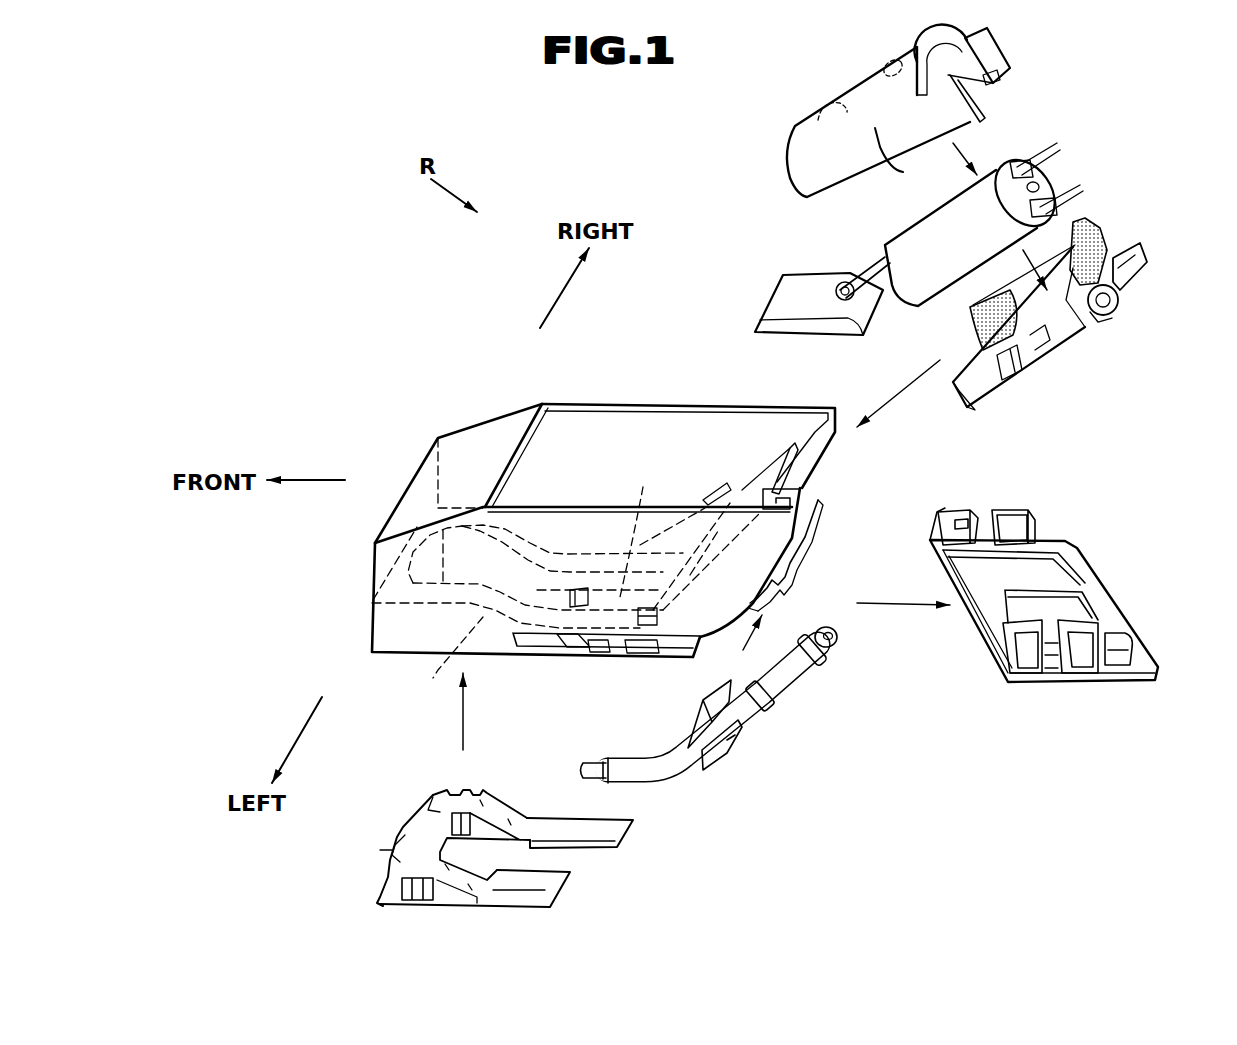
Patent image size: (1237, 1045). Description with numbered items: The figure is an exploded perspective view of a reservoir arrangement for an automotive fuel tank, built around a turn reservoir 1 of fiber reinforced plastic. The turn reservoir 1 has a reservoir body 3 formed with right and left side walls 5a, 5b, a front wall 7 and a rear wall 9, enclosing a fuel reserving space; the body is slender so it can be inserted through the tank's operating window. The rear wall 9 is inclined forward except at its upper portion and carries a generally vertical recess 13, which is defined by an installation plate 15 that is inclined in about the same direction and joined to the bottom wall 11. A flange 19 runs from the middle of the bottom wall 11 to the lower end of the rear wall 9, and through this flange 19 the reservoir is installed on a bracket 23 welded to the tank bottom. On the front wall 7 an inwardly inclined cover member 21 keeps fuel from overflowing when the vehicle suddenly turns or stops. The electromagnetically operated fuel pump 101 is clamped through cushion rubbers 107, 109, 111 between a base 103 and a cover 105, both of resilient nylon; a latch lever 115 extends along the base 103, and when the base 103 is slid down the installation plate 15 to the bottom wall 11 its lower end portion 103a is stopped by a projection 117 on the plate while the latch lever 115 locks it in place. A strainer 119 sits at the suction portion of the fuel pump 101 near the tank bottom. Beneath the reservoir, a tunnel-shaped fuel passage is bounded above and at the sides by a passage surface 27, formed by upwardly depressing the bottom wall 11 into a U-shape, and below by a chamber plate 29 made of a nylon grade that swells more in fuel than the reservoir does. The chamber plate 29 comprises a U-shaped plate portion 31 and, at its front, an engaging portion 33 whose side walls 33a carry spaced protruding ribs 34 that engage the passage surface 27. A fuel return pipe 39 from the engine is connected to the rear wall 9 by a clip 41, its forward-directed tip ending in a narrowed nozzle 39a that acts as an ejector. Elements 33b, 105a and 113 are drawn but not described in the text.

The turn reservoir 1 is at (606, 398).
The reservoir body 3 is at (651, 424).
The right side wall 5a is at (553, 520).
The left side wall 5b is at (563, 424).
The front wall 7 is at (407, 507).
The rear wall 9 is at (824, 510).
The bottom wall 11 is at (642, 528).
The recess 13 is at (810, 486).
The installation plate 15 is at (785, 430).
The flange 19 is at (603, 647).
The cover member 21 is at (468, 442).
The bracket 23 is at (1088, 550).
The passage surface 27 is at (446, 657).
The chamber plate 29 is at (567, 903).
The plate portion 31 is at (543, 890).
The engaging portion 33 is at (390, 852).
The side walls of engaging portion 33a is at (413, 813).
The terminal top tab 33b is at (440, 811).
The protruding ribs 34 is at (407, 820).
The fuel return pipe 39 is at (798, 678).
The nozzle 39a is at (593, 763).
The clip 41 is at (742, 728).
The fuel pump 101 is at (987, 167).
The base 103 is at (1060, 337).
The lower end portion of base 103a is at (992, 385).
The cover 105 is at (873, 92).
The cap clip 105a is at (1007, 77).
The cushion rubber 107 is at (1108, 233).
The cushion rubber 109 is at (987, 325).
The cushion rubber 111 is at (812, 120).
The ring contact 113 is at (1120, 310).
The latch lever 115 is at (1143, 257).
The projection 117 is at (725, 483).
The strainer 119 is at (795, 275).